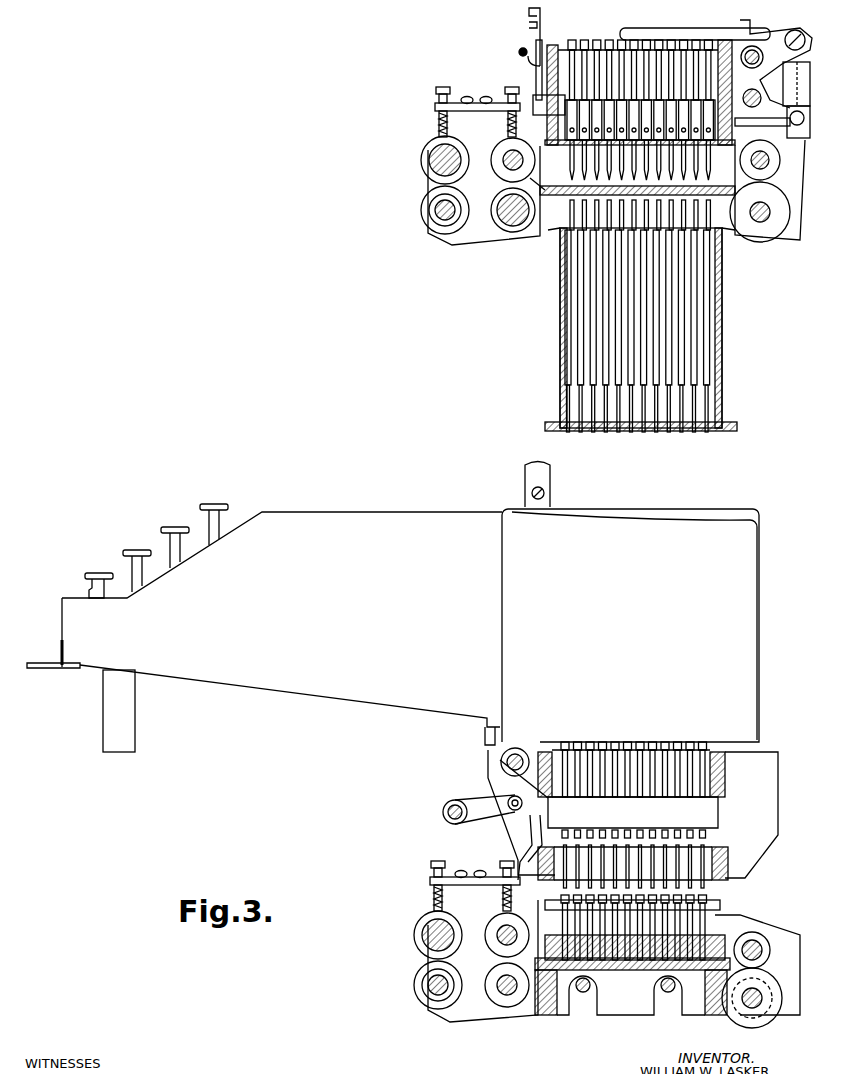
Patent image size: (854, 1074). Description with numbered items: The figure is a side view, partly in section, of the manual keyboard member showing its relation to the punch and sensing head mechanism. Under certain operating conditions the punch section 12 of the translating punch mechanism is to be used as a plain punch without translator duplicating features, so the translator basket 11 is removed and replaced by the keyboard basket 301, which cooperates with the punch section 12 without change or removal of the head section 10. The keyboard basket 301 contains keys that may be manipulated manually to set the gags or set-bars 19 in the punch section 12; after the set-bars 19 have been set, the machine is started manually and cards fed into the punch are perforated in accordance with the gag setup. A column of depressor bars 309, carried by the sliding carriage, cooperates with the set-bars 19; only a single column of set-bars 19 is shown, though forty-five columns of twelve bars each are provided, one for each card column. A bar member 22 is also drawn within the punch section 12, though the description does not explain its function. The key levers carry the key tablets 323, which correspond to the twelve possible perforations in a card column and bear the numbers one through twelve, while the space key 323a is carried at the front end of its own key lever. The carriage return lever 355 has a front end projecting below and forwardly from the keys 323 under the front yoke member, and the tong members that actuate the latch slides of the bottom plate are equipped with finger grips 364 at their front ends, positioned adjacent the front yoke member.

The head section 10 is at (353, 168).
The translator basket 11 is at (345, 350).
The punch section 12 is at (360, 818).
The keyboard basket 301 is at (340, 512).
The key tablets 323 is at (137, 550).
The space key 323a is at (98, 573).
The lever 355 is at (47, 670).
The finger grips 364 is at (124, 714).
The set-bars 19 is at (612, 742).
The depressor bars 309 is at (672, 742).
The bar 22 is at (633, 812).